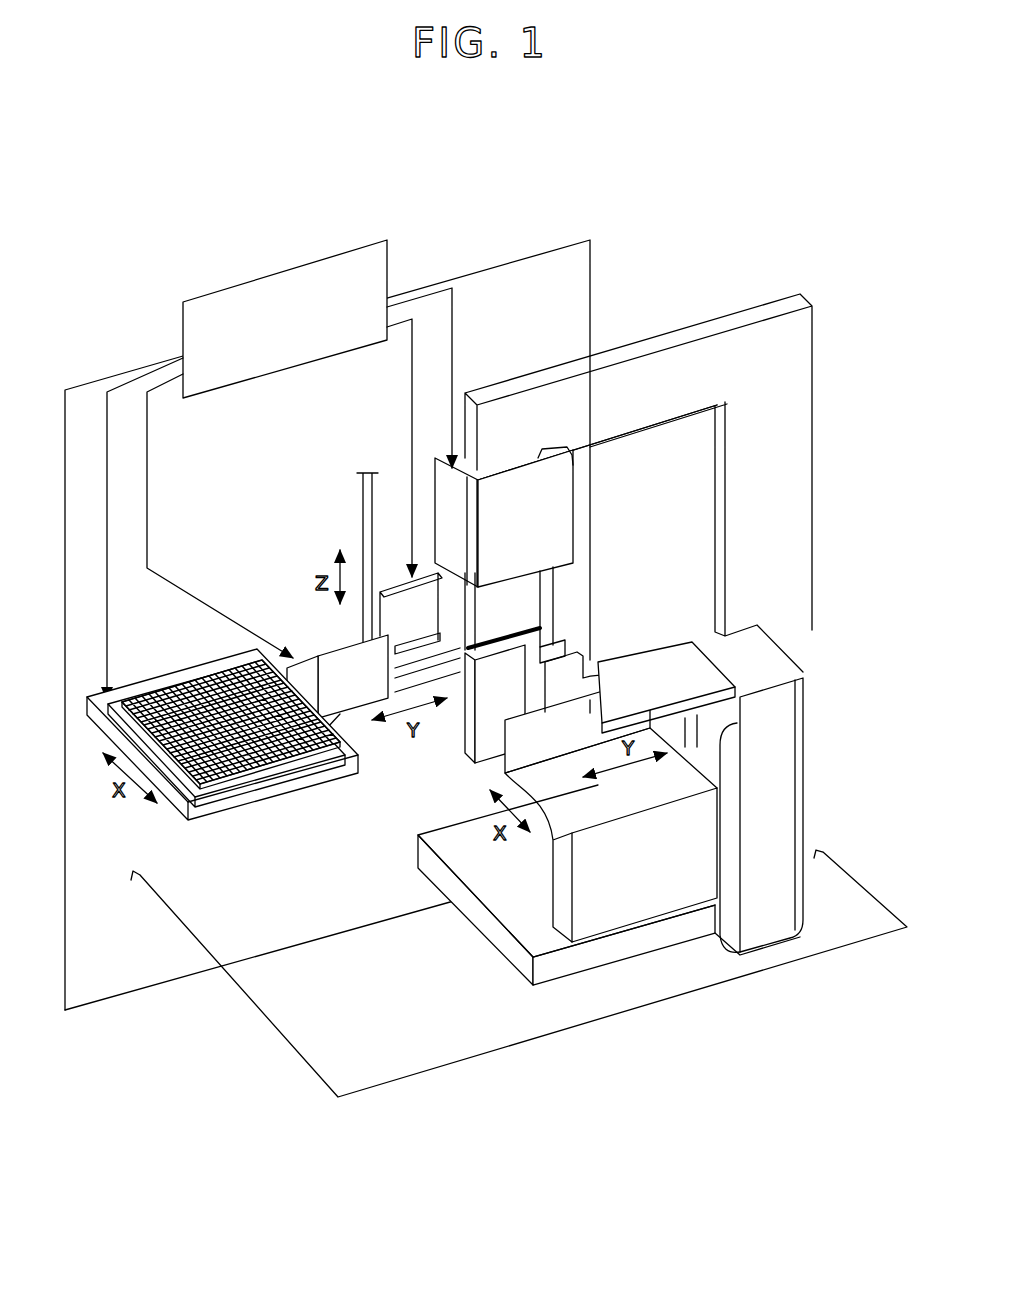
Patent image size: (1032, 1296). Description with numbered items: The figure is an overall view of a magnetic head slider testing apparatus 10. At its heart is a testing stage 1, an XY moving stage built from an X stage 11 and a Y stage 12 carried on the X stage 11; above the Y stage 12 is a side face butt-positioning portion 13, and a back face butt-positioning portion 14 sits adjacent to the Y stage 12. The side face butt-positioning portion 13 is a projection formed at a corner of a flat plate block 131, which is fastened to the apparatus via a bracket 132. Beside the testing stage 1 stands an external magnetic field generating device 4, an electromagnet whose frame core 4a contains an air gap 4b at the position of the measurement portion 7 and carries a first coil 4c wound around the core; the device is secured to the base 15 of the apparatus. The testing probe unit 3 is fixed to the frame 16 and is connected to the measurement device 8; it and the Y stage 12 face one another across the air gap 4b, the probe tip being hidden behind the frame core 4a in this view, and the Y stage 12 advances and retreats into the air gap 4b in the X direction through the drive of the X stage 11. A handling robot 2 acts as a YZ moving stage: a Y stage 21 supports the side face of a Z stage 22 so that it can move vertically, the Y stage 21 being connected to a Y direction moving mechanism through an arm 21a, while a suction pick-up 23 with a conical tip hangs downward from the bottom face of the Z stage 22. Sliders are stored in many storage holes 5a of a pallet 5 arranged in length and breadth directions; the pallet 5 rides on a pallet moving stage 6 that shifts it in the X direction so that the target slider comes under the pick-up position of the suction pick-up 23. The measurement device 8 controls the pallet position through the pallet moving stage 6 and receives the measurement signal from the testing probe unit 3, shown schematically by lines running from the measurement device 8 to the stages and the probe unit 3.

The testing stage 1 is at (450, 810).
The handling robot 2 is at (318, 630).
The testing probe unit 3 is at (378, 575).
The external magnetic field generating device 4 is at (605, 498).
The frame core 4a is at (812, 422).
The air gap 4b is at (555, 637).
The first coil 4c is at (560, 482).
The pallet 5 is at (163, 685).
The storage holes 5a is at (290, 752).
The pallet moving stage 6 is at (252, 800).
The measurement portion 7 is at (550, 640).
The measurement device 8 is at (302, 258).
The magnetic head slider testing apparatus 10 is at (660, 272).
The X stage 11 is at (630, 943).
The Y stage 12 is at (552, 790).
The side face butt-positioning portion 13 is at (598, 684).
The back face butt-positioning portion 14 is at (523, 677).
The base 15 is at (430, 1052).
The frame 16 is at (360, 492).
The guide rail 21 is at (395, 650).
The arm 21a is at (514, 636).
The Z stage 22 is at (290, 656).
The suction pick-up 23 is at (330, 722).
The flat plate block 131 is at (700, 673).
The bracket 132 is at (778, 770).